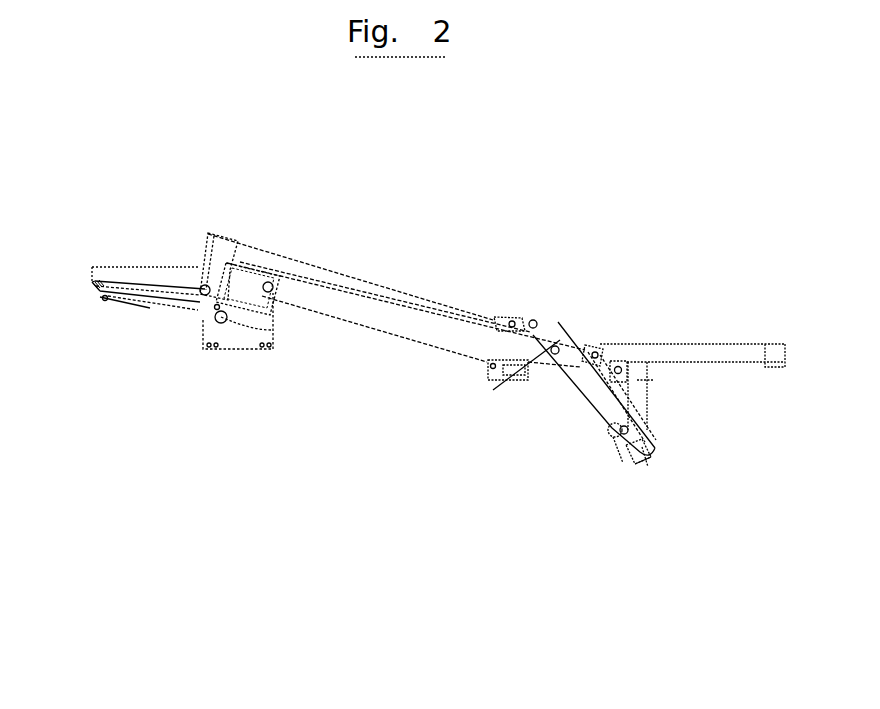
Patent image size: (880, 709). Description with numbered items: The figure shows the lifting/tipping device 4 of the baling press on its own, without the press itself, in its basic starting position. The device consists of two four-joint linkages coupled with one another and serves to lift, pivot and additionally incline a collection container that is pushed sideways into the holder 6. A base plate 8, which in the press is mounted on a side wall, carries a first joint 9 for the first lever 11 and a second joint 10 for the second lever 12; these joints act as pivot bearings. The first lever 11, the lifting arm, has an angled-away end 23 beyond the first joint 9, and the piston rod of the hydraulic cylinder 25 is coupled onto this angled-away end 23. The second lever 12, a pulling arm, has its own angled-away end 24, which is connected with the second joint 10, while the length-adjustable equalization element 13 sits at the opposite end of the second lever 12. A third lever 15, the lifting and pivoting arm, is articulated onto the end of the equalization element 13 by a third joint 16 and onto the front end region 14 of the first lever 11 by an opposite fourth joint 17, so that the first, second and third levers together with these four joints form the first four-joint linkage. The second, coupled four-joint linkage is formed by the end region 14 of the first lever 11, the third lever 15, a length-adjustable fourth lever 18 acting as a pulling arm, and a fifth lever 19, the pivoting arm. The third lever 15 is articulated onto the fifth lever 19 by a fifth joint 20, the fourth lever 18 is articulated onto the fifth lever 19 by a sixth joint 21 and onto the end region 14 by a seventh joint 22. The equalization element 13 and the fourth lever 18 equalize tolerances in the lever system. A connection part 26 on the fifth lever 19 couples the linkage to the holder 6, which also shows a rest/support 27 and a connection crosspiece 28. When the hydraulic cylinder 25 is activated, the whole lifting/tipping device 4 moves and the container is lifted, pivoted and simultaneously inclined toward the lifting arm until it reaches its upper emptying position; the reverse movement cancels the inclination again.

The lifting/tipping device 4 is at (504, 109).
The holder 6 is at (635, 380).
The base plate 8 is at (233, 343).
The first joint 9 is at (266, 281).
The second joint 10 is at (178, 296).
The first lever 11 is at (422, 328).
The second lever 12 is at (362, 272).
The length-adjustable equalization element 13 is at (512, 322).
The front end region of the first lever 14 is at (570, 343).
The third lever 15 is at (585, 385).
The third joint 16 is at (548, 340).
The fourth joint 17 is at (533, 320).
The length-adjustable fourth lever 18 is at (638, 392).
The fifth lever 19 is at (623, 463).
The fifth joint 20 is at (608, 442).
The sixth joint 21 is at (655, 451).
The seventh joint 22 is at (605, 345).
The angled-away end of the first lever 23 is at (277, 303).
The angled-away end of the second lever 24 is at (202, 248).
The hydraulic cylinder 25 is at (150, 308).
The connection part 26 is at (645, 468).
The rest/support 27 is at (476, 413).
The connection crosspiece 28 is at (243, 265).